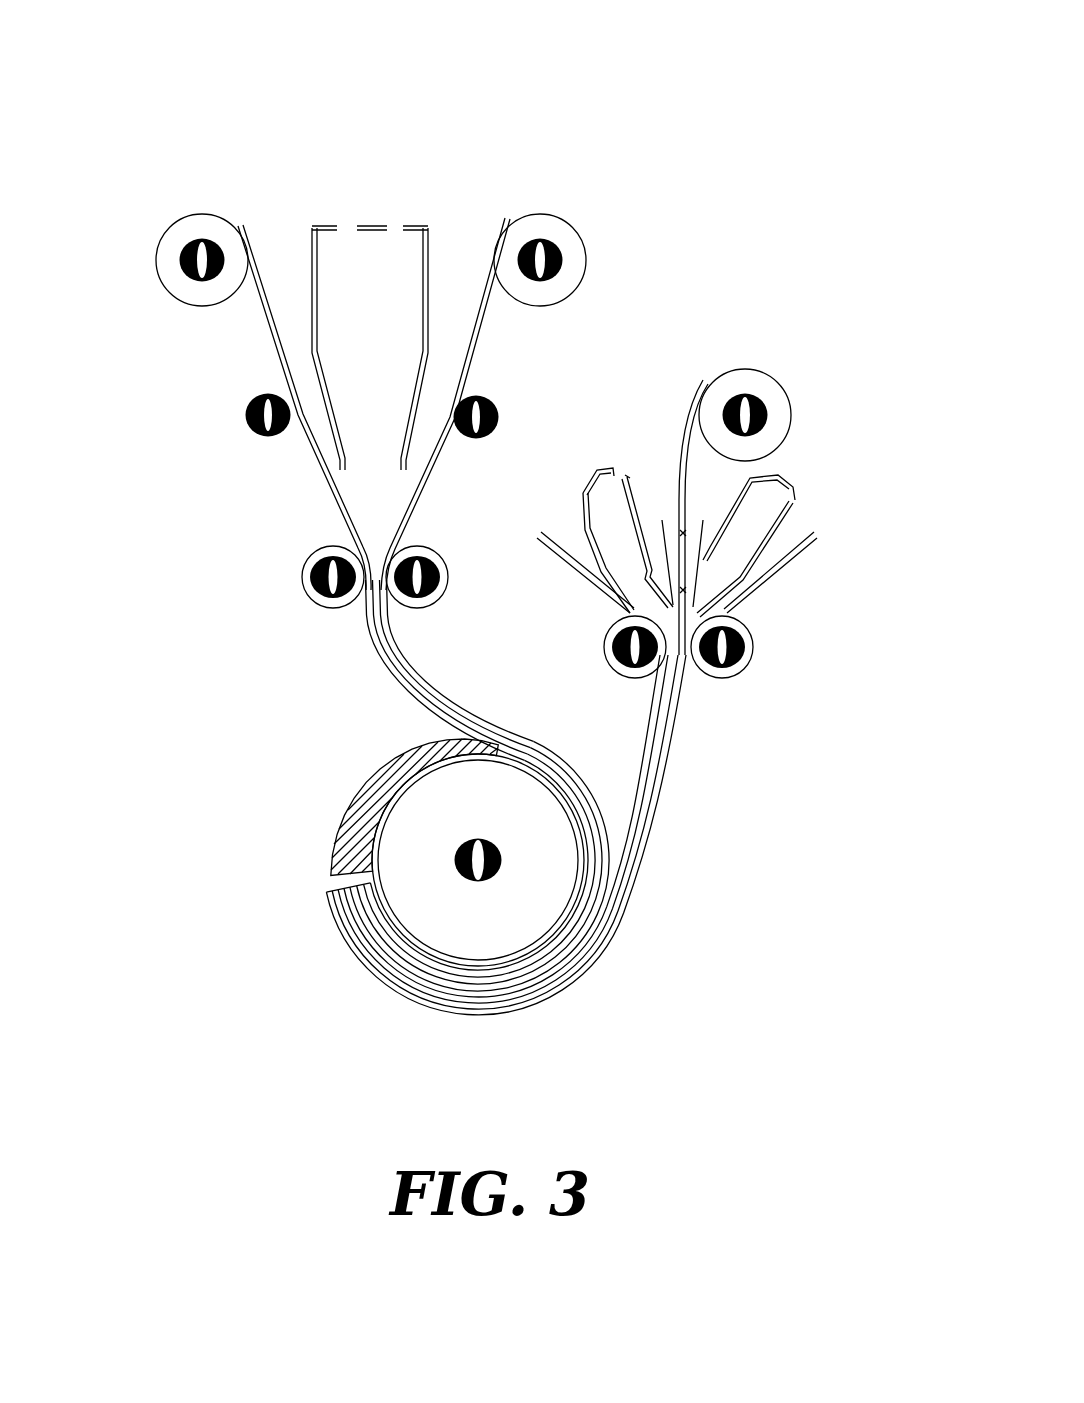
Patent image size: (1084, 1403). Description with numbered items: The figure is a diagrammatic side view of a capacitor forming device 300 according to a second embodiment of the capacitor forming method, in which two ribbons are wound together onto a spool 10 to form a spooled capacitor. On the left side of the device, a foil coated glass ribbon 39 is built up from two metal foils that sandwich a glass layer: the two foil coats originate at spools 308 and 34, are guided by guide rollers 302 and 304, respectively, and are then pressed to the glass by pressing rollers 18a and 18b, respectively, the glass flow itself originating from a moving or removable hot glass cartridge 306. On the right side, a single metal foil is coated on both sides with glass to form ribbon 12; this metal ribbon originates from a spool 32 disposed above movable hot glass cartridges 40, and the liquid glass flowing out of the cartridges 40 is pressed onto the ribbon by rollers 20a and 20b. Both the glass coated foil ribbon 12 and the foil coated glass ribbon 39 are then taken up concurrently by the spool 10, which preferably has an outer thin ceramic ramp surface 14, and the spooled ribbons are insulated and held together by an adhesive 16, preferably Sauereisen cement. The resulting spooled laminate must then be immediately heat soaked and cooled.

The capacitor forming device 300 is at (838, 108).
The spool 308 is at (160, 247).
The hot glass cartridge 306 is at (432, 246).
The spool 34 is at (585, 250).
The spool 32 is at (786, 379).
The guide roller 304 is at (500, 418).
The guide roller 302 is at (246, 420).
The hot glass cartridges 40 is at (627, 478).
The pressing roller 18a is at (304, 588).
The pressing roller 18b is at (442, 556).
The foil coated glass ribbon 39 is at (398, 650).
The roller 20a is at (606, 664).
The roller 20b is at (735, 677).
The ribbon 12 is at (651, 815).
The ceramic ramp surface 14 is at (330, 873).
The adhesive 16 is at (326, 885).
The spool 10 is at (530, 950).